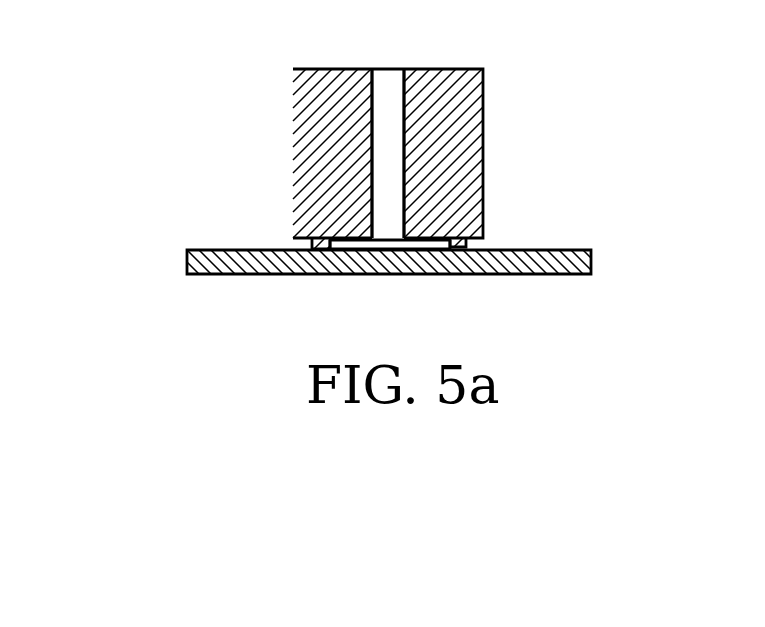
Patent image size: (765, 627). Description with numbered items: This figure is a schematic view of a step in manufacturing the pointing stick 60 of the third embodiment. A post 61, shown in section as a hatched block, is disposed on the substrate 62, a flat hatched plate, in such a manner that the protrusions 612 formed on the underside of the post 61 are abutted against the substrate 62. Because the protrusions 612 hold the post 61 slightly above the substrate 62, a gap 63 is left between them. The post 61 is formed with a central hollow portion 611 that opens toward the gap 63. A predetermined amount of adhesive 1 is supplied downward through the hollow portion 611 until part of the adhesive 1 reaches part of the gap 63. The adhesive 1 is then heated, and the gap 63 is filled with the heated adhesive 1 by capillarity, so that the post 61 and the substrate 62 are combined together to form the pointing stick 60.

The pointing stick 60 is at (90, 20).
The adhesive 1 is at (383, 68).
The post 61 is at (460, 161).
The hollow portion 611 is at (380, 163).
The protrusions 612 is at (462, 240).
The substrate 62 is at (568, 257).
The gap 63 is at (390, 245).